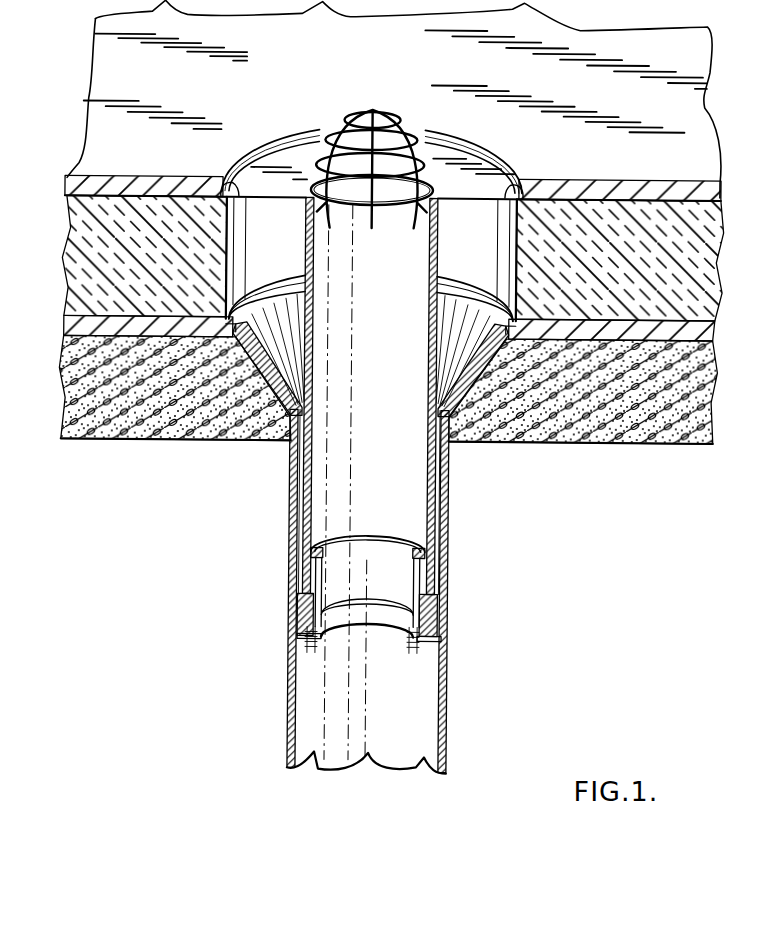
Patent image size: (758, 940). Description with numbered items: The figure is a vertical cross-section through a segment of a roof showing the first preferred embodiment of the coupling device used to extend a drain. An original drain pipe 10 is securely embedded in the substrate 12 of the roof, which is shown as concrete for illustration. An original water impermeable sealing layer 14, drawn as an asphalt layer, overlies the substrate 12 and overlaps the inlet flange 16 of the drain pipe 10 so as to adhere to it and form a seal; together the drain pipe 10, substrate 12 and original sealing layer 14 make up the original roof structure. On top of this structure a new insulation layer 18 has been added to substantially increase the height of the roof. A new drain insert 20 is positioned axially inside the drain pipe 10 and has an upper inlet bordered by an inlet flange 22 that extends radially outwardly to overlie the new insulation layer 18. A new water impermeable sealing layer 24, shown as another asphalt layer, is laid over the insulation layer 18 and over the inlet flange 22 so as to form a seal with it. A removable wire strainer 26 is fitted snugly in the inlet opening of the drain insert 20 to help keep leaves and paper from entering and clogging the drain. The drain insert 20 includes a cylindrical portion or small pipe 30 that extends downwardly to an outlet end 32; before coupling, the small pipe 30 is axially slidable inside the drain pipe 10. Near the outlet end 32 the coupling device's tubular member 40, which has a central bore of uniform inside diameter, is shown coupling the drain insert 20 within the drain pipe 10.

The drain pipe 10 is at (280, 707).
The substrate 12 is at (58, 409).
The original sealing layer 14 is at (58, 326).
The inlet flange 16 is at (233, 338).
The new insulation layer 18 is at (58, 244).
The drain insert 20 is at (237, 196).
The inlet flange 22 is at (302, 233).
The new sealing layer 24 is at (58, 182).
The removable wire strainer 26 is at (371, 92).
The small pipe 30 is at (452, 479).
The outlet end 32 is at (450, 616).
The tubular member 40 is at (293, 625).